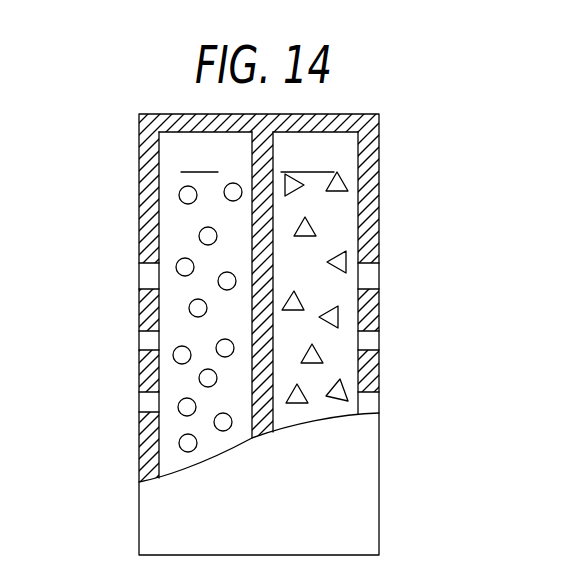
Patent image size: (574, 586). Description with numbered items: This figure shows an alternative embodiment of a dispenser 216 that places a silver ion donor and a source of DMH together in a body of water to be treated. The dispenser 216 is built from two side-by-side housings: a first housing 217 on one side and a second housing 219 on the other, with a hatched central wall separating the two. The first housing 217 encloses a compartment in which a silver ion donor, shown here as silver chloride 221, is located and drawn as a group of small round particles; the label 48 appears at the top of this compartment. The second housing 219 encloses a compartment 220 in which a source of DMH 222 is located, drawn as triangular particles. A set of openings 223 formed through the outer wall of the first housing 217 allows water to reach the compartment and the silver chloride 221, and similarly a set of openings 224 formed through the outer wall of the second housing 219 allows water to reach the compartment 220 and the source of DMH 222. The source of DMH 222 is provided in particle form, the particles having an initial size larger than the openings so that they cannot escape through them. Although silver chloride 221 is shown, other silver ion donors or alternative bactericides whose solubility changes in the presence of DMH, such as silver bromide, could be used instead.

The dispenser 216 is at (372, 90).
The first housing 217 is at (158, 176).
The second housing 219 is at (359, 208).
The first chamber media 48 is at (199, 157).
The compartment 220 is at (309, 157).
The silver chloride 221 is at (189, 307).
The source of DMH 222 is at (300, 297).
The set of openings 223 is at (138, 338).
The set of openings 224 is at (381, 338).